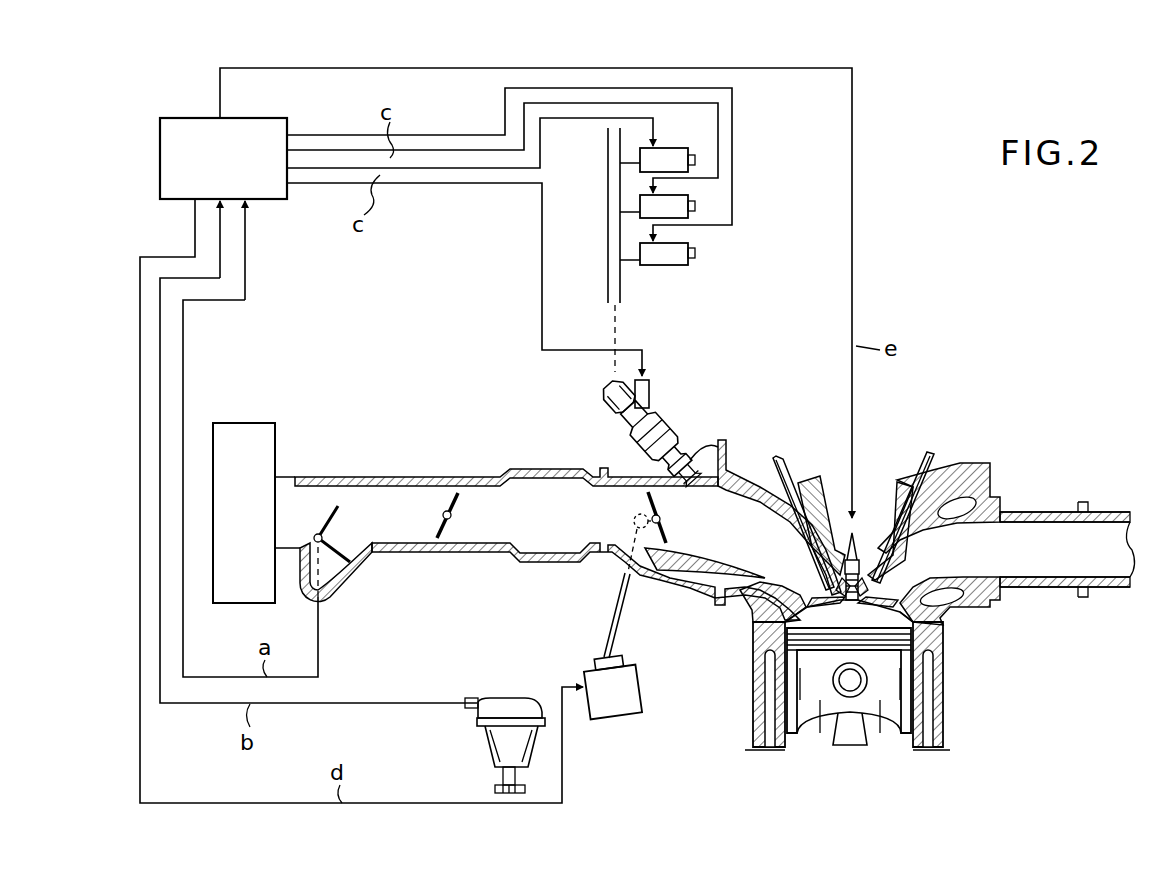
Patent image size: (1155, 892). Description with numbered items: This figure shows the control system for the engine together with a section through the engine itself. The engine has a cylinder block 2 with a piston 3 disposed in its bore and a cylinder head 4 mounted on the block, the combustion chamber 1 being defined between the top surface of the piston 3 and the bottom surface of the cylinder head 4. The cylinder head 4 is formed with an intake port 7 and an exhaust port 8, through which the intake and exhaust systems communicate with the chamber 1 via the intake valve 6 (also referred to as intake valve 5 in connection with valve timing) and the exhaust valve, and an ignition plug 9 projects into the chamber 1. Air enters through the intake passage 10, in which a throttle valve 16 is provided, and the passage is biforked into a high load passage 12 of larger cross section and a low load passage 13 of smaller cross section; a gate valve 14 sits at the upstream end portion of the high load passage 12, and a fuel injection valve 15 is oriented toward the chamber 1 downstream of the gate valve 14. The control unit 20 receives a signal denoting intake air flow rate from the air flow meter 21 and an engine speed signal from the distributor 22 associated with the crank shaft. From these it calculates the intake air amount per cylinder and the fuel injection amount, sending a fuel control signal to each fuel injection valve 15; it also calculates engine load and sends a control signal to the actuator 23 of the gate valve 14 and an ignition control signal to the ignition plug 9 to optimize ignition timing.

The combustion chamber 1 is at (852, 614).
The cylinder block 2 is at (946, 688).
The piston 3 is at (820, 707).
The cylinder head 4 is at (972, 600).
The intake valve 5 is at (788, 462).
The intake valve 6 is at (920, 458).
The intake port 7 is at (782, 588).
The exhaust port 8 is at (975, 535).
The ignition plug 9 is at (858, 533).
The intake passage 10 is at (487, 532).
The high load passage 12 is at (745, 492).
The low load passage 13 is at (690, 580).
The gate valve 14 is at (645, 497).
The fuel injection valve 15 is at (668, 145).
The throttle valve 16 is at (452, 490).
The control unit 20 is at (249, 118).
The air flow meter 21 is at (352, 582).
The distributor 22 is at (516, 705).
The actuator 23 is at (645, 697).